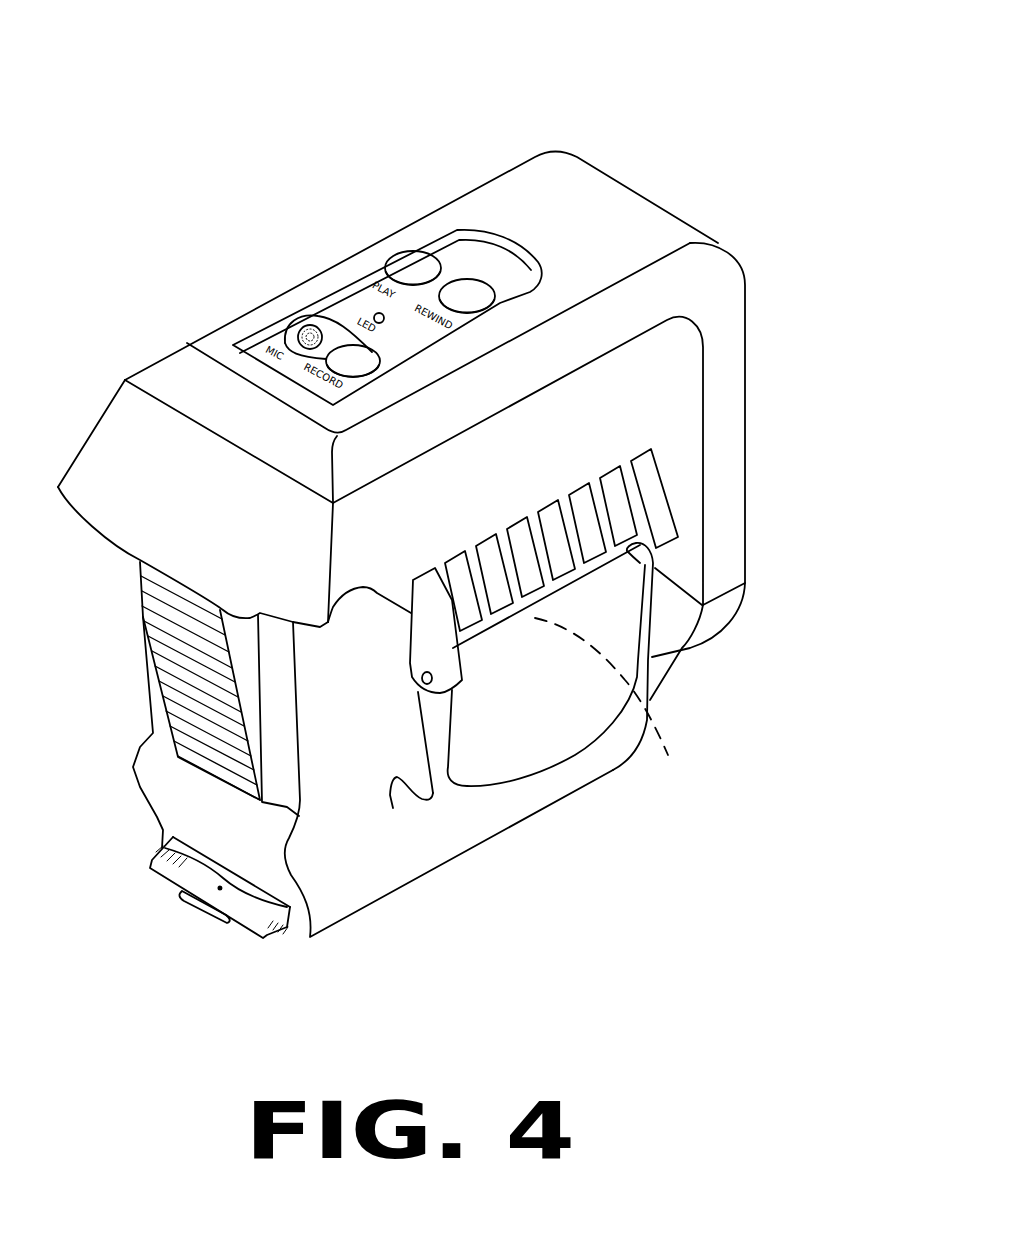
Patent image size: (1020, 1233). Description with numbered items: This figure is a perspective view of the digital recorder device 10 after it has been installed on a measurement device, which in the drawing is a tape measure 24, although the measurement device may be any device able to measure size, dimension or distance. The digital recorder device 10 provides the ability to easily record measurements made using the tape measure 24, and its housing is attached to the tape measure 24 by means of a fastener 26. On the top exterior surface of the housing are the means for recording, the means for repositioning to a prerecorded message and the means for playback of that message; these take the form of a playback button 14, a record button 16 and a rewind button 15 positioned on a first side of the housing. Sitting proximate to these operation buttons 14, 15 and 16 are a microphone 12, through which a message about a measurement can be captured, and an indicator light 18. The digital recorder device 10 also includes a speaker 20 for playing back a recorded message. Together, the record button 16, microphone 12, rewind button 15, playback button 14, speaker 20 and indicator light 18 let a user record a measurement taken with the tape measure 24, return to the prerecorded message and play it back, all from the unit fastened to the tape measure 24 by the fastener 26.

The digital recorder device 10 is at (736, 170).
The microphone 12 is at (312, 335).
The playback button 14 is at (413, 265).
The rewind button 15 is at (470, 293).
The record button 16 is at (347, 363).
The indicator light 18 is at (373, 317).
The speaker 20 is at (392, 803).
The tape measure 24 is at (450, 820).
The fastener 26 is at (619, 719).